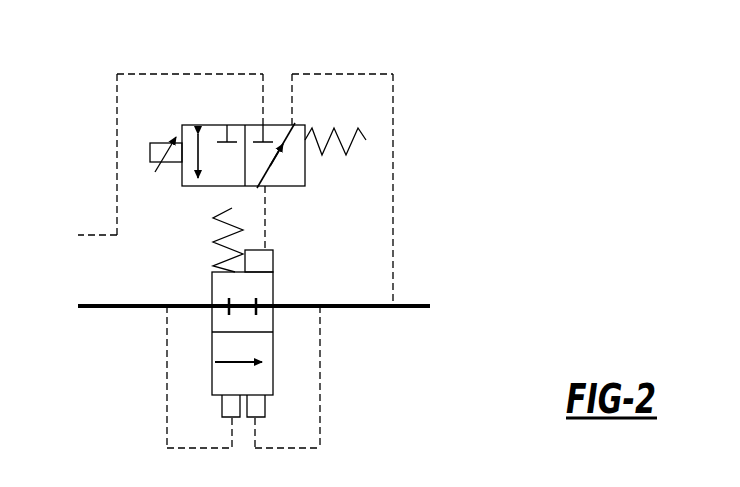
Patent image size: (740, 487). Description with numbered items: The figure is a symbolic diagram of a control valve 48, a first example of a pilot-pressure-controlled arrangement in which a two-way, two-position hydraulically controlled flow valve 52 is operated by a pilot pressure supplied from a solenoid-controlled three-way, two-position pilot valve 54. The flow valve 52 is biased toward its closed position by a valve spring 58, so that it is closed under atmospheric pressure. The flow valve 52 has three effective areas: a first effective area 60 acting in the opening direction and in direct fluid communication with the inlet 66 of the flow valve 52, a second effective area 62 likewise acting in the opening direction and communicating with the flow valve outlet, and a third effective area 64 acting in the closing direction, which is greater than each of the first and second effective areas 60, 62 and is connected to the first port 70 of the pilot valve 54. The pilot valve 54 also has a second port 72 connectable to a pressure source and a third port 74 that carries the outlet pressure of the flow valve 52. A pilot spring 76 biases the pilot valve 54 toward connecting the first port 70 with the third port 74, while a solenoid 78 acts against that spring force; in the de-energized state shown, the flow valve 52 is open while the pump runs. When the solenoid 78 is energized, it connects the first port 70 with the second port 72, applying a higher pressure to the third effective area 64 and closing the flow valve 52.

The control valve 48 is at (126, 391).
The flow valve 52 is at (270, 397).
The pilot valve 54 is at (305, 177).
The valve spring 58 is at (217, 255).
The first effective area 60 is at (232, 418).
The second effective area 62 is at (262, 418).
The third effective area 64 is at (273, 250).
The inlet 66 is at (212, 310).
The first port 70 is at (263, 188).
The second port 72 is at (263, 125).
The third port 74 is at (291, 123).
The pilot spring 76 is at (347, 135).
The solenoid 78 is at (150, 150).